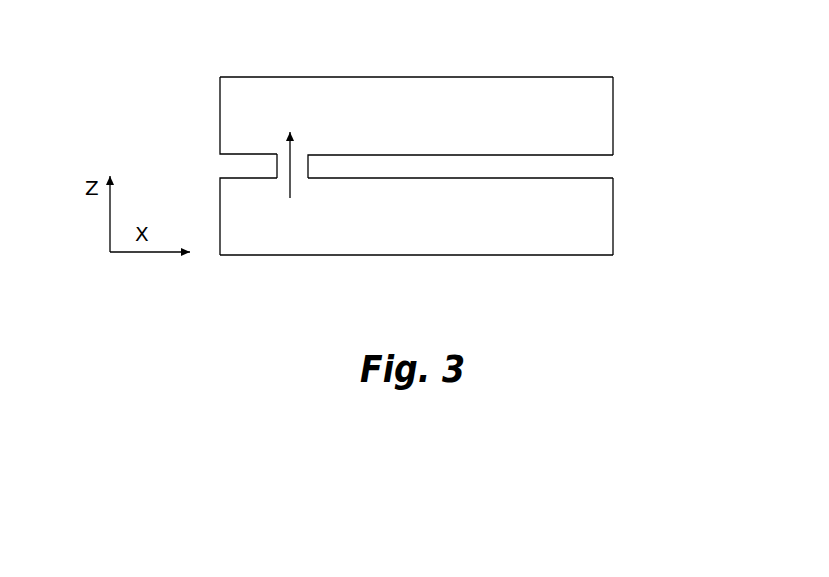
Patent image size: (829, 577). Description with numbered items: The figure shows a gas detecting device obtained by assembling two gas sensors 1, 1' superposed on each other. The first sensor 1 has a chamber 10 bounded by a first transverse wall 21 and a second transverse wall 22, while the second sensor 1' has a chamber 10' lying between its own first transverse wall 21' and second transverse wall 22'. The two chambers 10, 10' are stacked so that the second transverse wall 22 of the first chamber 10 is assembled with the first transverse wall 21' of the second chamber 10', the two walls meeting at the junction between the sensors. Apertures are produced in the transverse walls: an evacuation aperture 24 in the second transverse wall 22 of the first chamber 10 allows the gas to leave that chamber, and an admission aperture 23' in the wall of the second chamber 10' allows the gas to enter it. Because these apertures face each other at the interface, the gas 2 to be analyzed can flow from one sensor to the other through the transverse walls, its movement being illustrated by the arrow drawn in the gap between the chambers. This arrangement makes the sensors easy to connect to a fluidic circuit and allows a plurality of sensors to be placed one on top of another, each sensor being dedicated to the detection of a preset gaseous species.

The gas sensor 1 is at (233, 216).
The gas sensor 1' is at (220, 115).
The gas 2 is at (283, 150).
The chamber 10 is at (617, 216).
The chamber 10' is at (629, 116).
The first transverse wall 21 is at (416, 289).
The first transverse wall 21' is at (214, 174).
The second transverse wall 22 is at (486, 158).
The second transverse wall 22' is at (438, 61).
The admission aperture 23' is at (458, 112).
The evacuation aperture 24 is at (303, 185).